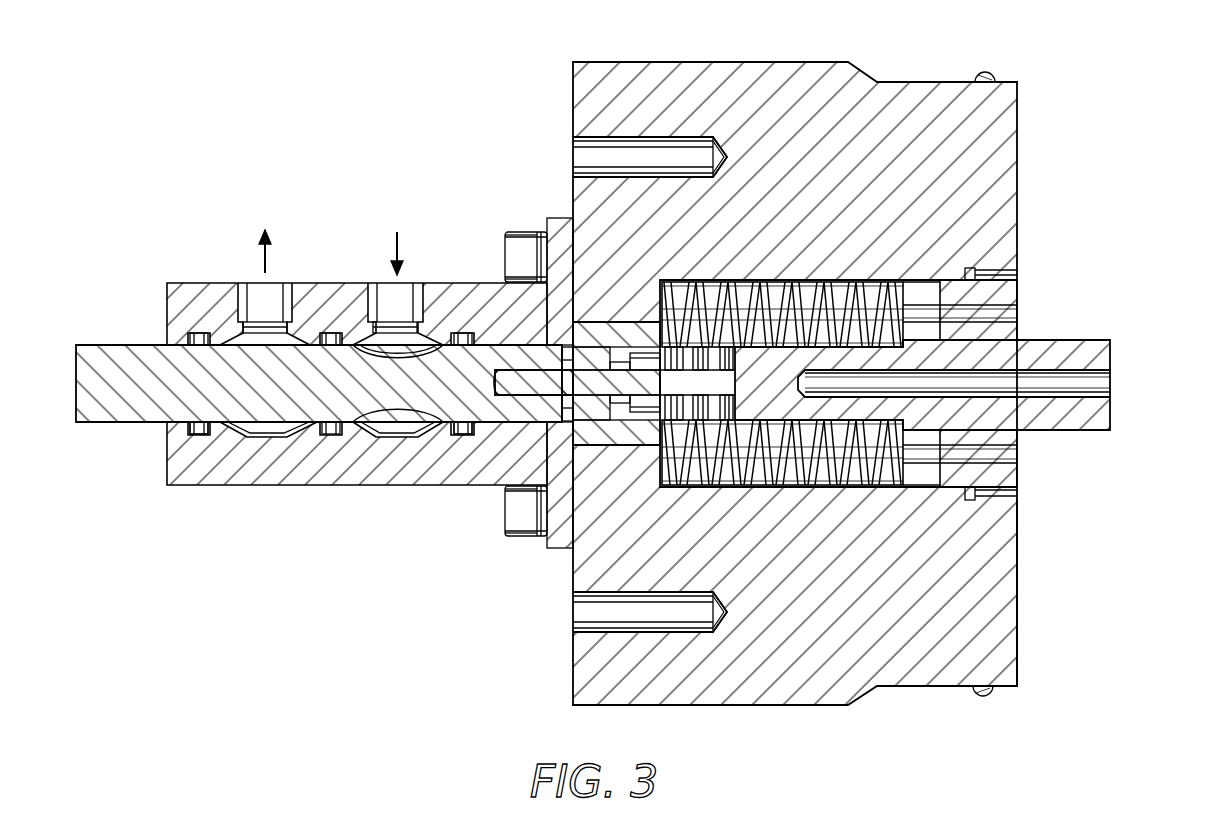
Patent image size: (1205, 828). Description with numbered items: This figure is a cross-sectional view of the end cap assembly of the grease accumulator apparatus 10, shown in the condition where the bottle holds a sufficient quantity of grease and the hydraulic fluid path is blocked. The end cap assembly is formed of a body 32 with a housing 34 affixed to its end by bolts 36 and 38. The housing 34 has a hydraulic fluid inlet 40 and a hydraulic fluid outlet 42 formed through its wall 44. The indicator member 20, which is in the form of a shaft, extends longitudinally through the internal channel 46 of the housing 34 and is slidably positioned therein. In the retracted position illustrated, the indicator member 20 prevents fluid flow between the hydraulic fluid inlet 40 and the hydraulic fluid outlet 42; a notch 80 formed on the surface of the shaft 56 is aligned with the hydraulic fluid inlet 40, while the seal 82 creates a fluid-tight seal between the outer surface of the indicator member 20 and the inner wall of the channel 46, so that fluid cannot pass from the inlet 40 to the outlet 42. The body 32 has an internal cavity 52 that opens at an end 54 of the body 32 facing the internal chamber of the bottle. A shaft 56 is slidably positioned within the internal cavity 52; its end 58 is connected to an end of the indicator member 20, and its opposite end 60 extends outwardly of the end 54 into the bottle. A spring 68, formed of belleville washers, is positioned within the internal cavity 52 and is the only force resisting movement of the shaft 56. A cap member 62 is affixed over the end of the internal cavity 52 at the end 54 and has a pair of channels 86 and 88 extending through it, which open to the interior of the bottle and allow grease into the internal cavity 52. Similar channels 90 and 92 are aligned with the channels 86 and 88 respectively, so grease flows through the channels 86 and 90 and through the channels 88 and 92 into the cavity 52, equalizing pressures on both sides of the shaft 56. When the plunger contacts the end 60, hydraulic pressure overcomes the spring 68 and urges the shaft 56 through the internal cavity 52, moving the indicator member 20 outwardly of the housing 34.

The grease accumulator apparatus 10 is at (517, 118).
The indicator member 20 is at (140, 355).
The body 32 is at (860, 75).
The housing 34 is at (220, 485).
The bolt 36 is at (515, 250).
The bolt 38 is at (512, 500).
The hydraulic fluid inlet 40 is at (378, 295).
The hydraulic fluid outlet 42 is at (255, 300).
The wall 44 is at (185, 300).
The channel 46 is at (165, 428).
The internal cavity 52 is at (810, 282).
The end 54 is at (1017, 580).
The shaft 56 is at (1100, 345).
The end 58 is at (500, 373).
The end 60 is at (1112, 405).
The cap member 62 is at (1010, 490).
The spring 68 is at (773, 477).
The notch 80 is at (398, 345).
The seal 82 is at (455, 435).
The channel 86 is at (1008, 313).
The channel 88 is at (1000, 447).
The channel 90 is at (917, 310).
The channel 92 is at (918, 458).